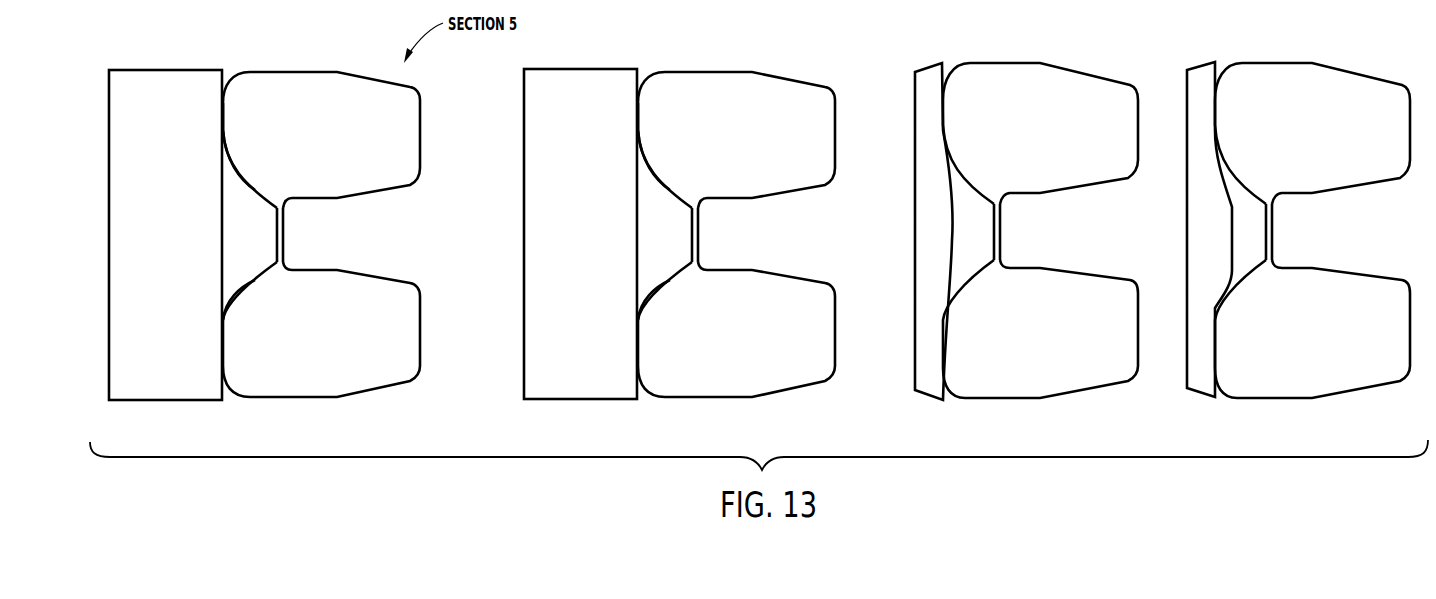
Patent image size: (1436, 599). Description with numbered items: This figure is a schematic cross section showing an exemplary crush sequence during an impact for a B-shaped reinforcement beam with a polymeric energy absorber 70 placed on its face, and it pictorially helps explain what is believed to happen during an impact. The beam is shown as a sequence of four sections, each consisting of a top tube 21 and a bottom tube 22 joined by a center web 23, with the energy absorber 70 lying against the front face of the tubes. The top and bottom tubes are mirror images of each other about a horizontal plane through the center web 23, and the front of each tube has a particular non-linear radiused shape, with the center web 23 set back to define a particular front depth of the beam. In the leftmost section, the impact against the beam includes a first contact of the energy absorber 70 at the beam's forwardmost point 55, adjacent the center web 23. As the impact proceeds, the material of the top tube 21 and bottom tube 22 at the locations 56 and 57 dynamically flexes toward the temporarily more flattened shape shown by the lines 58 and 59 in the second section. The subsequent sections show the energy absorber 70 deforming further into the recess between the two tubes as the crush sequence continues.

The polymeric energy absorber 70 is at (156, 70).
The top tube 21 is at (273, 72).
The bottom tube 22 is at (396, 280).
The center web 23 is at (285, 223).
The forwardmost point 55 is at (224, 124).
The location of dynamic flexing 56 is at (236, 172).
The location of dynamic flexing 57 is at (238, 297).
The temporarily more flattened shape line 58 is at (646, 184).
The temporarily more flattened shape line 59 is at (651, 281).